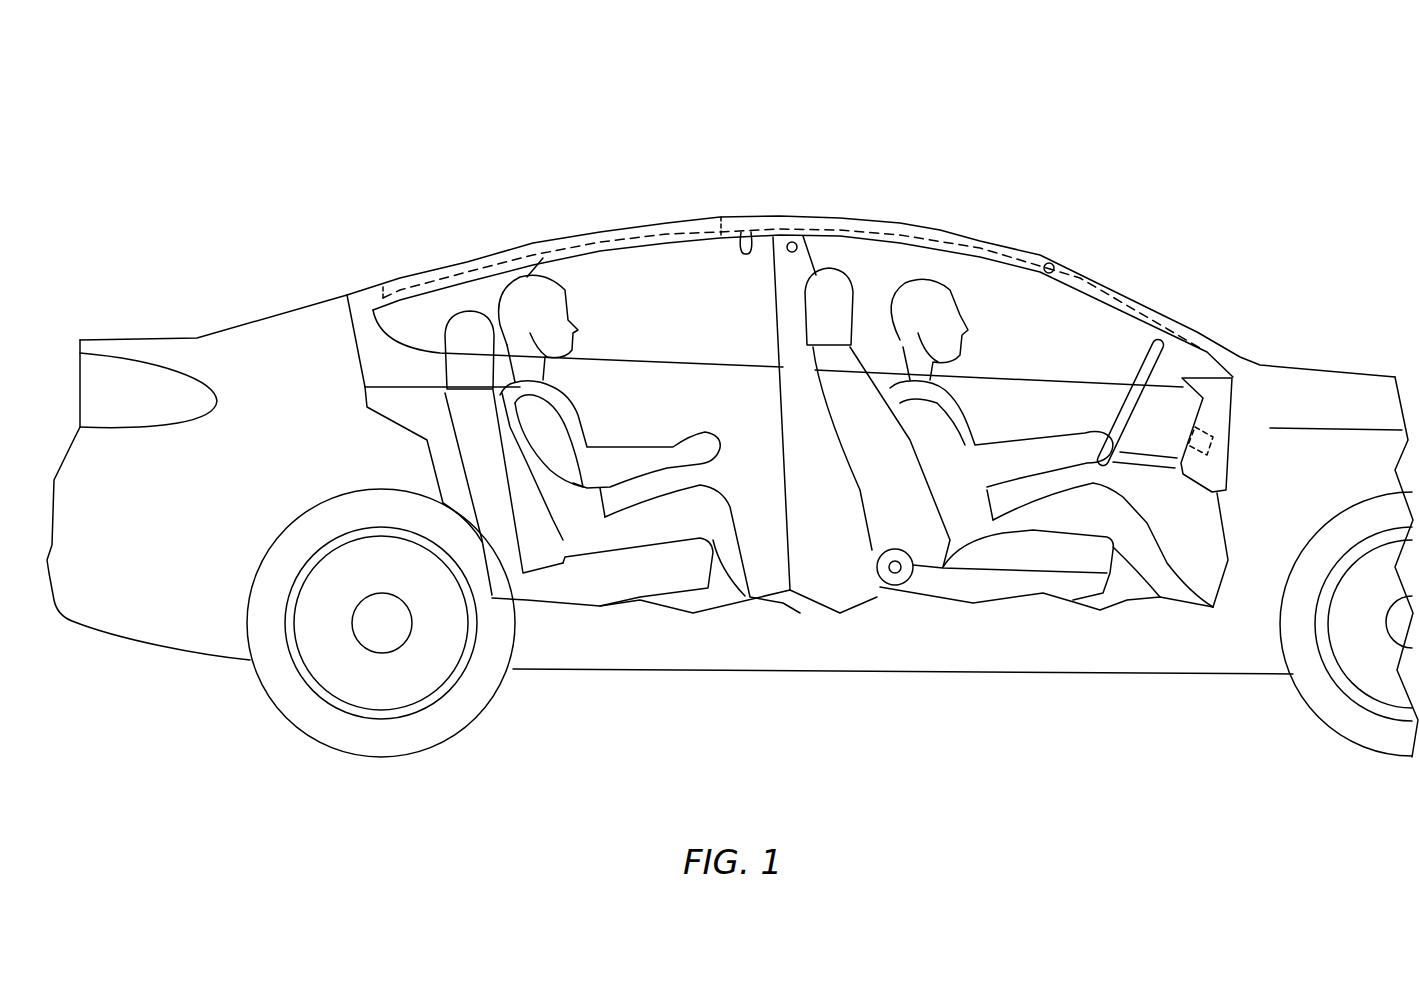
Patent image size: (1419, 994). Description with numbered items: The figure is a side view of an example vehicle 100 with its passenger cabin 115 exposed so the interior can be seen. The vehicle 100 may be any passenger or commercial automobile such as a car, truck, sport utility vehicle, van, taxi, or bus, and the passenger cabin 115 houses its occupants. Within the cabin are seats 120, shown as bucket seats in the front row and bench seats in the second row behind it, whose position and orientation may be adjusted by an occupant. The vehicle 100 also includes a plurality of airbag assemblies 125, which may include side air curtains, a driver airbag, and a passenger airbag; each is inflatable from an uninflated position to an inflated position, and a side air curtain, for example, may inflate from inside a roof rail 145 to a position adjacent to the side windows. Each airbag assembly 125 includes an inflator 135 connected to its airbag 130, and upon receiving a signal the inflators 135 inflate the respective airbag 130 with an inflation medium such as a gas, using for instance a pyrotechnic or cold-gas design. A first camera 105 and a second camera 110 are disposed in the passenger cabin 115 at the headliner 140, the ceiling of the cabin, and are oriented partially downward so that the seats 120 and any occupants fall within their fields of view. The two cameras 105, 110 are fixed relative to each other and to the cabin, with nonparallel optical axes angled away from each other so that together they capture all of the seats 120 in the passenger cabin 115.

The vehicle 100 is at (1173, 117).
The first camera 105 is at (1054, 268).
The second camera 110 is at (797, 243).
The passenger cabin 115 is at (743, 473).
The seats 120 is at (493, 467).
The airbag assemblies 125 is at (995, 237).
The airbag 130 is at (898, 224).
The inflators 135 is at (970, 237).
The headliner 140 is at (743, 245).
The roof rail 145 is at (787, 216).